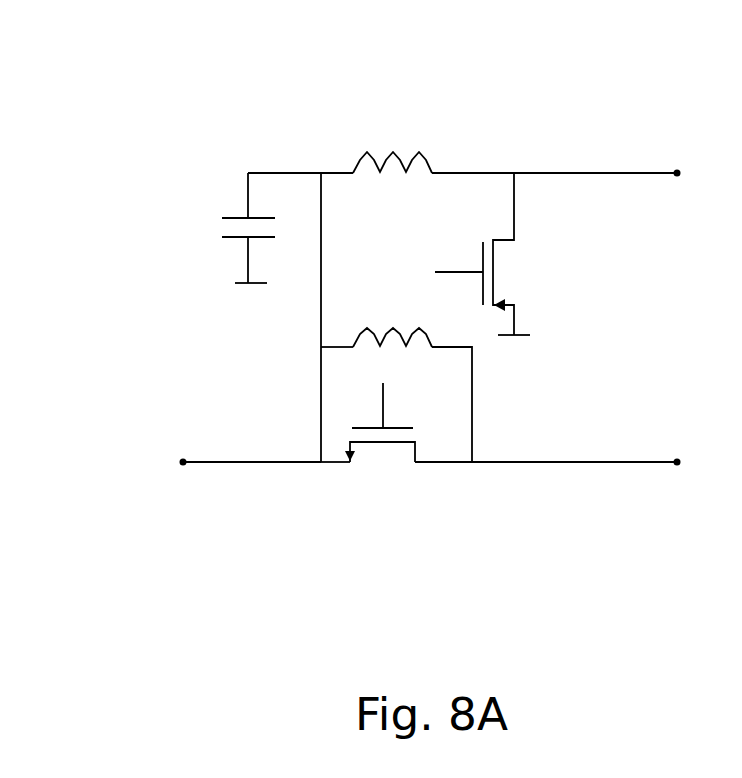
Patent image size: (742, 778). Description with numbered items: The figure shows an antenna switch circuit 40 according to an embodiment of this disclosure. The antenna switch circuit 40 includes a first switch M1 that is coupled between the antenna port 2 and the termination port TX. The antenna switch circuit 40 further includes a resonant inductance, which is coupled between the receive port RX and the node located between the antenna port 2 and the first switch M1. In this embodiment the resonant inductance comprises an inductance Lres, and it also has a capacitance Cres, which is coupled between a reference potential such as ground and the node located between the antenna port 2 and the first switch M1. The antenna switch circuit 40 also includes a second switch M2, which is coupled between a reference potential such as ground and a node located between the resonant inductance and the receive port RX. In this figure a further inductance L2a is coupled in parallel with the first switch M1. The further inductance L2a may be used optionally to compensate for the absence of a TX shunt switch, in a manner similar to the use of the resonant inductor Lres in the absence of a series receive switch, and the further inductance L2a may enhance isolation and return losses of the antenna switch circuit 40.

The antenna port 2 is at (183, 456).
The antenna switch circuit 40 is at (451, 269).
The resonant inductance Lres is at (392, 145).
The capacitance Cres is at (223, 228).
The further inductance L2a is at (396, 375).
The first switch M1 is at (380, 449).
The second switch M2 is at (509, 254).
The receive port RX is at (702, 173).
The termination port TX is at (701, 463).